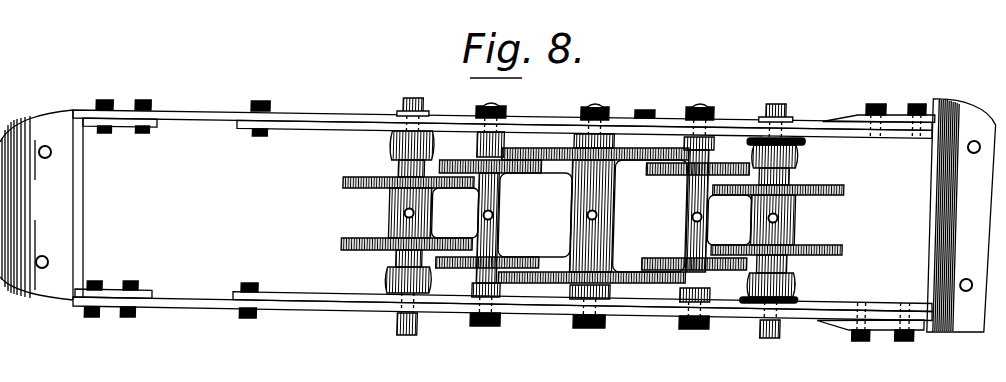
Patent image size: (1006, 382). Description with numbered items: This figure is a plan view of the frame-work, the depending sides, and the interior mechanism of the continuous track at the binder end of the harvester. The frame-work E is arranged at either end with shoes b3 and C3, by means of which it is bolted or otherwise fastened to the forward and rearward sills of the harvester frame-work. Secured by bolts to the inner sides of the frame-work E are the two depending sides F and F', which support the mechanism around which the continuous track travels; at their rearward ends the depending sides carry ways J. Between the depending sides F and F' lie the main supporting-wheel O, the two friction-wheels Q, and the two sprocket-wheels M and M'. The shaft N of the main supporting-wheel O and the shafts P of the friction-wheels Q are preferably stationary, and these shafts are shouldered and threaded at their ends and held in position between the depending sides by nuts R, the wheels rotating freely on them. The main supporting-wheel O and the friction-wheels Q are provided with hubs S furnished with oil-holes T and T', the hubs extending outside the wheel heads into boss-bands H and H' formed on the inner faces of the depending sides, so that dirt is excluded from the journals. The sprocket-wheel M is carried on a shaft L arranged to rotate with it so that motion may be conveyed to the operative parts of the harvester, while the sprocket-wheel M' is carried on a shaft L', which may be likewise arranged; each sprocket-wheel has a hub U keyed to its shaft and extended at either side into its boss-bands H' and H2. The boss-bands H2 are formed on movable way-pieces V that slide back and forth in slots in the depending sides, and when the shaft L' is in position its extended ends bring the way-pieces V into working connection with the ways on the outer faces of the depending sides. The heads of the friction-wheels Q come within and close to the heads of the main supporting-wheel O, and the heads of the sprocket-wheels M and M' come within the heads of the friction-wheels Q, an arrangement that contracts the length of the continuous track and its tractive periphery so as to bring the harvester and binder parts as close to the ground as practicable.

The frame-work E is at (502, 210).
The depending side F is at (507, 141).
The depending side F' is at (503, 290).
The shaft of sprocket-wheel M L is at (410, 216).
The shaft of sprocket-wheel M' L' is at (773, 221).
The nut R is at (592, 218).
The boss-band H is at (587, 221).
The boss-band H' is at (395, 212).
The boss-band H2 is at (798, 160).
The sprocket-wheel M is at (408, 204).
The sprocket-wheel M' is at (791, 219).
The hub of sprocket-wheel U is at (389, 214).
The oil-hole T is at (645, 217).
The oil-hole T' is at (466, 213).
The friction-wheel Q is at (509, 174).
The main supporting-wheel O is at (562, 161).
The hub S is at (570, 236).
The shaft of main supporting-wheel N is at (640, 110).
The shaft of friction-wheel P is at (506, 120).
The way J is at (875, 223).
The movable way-piece V is at (805, 143).
The shoe b3 is at (36, 205).
The shoe C3 is at (962, 215).